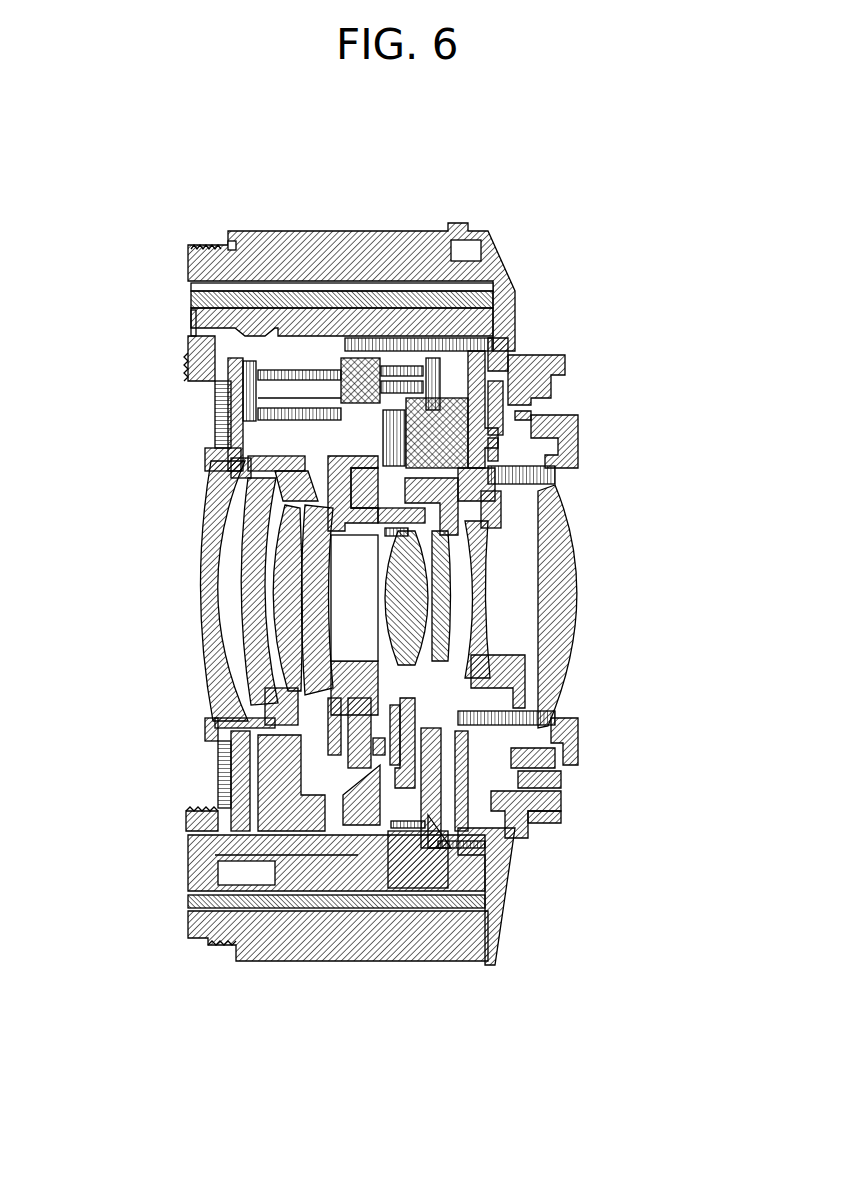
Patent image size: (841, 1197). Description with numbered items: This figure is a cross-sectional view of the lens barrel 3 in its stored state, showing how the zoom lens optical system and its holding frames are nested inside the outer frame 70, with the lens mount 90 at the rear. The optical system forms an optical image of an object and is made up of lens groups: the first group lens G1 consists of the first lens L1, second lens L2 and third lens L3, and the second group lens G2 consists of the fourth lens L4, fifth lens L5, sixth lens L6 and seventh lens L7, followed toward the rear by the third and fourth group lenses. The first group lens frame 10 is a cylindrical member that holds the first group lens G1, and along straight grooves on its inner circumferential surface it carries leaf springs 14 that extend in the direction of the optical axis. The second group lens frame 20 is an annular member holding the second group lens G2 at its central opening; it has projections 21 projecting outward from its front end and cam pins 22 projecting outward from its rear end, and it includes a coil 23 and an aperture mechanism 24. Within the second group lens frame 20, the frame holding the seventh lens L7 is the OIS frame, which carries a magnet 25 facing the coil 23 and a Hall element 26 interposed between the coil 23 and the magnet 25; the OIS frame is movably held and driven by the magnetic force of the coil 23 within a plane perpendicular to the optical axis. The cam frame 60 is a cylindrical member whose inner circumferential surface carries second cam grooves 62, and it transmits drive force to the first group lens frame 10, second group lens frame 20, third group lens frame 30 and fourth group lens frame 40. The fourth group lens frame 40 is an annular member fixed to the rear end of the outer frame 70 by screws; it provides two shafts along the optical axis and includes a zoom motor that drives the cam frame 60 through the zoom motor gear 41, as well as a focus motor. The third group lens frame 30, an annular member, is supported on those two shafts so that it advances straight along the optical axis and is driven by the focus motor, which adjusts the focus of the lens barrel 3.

The lens barrel 3 is at (176, 204).
The outer frame 70 is at (343, 232).
The zoom motor gear 41 is at (362, 372).
The lens mount 90 is at (505, 322).
The first group lens frame 10 is at (180, 350).
The third group lens frame 30 is at (473, 470).
The first lens L1 is at (198, 593).
The second lens L2 is at (243, 630).
The third lens L3 is at (283, 650).
The first group lens G1 is at (85, 575).
The fourth lens L4 is at (395, 547).
The fifth lens L5 is at (432, 580).
The sixth lens L6 is at (460, 608).
The seventh lens L7 is at (492, 636).
The second group lens G2 is at (658, 502).
The aperture mechanism 24 is at (320, 740).
The coil 23 is at (367, 733).
The magnet 25 is at (378, 738).
The Hall element 26 is at (430, 795).
The fourth group lens frame 40 is at (440, 718).
The second group lens frame 20 is at (393, 773).
The projection 21 is at (187, 878).
The leaf spring 14 is at (210, 887).
The cam frame 60 is at (437, 843).
The second cam groove 62 is at (400, 850).
The cam pin 22 is at (405, 848).